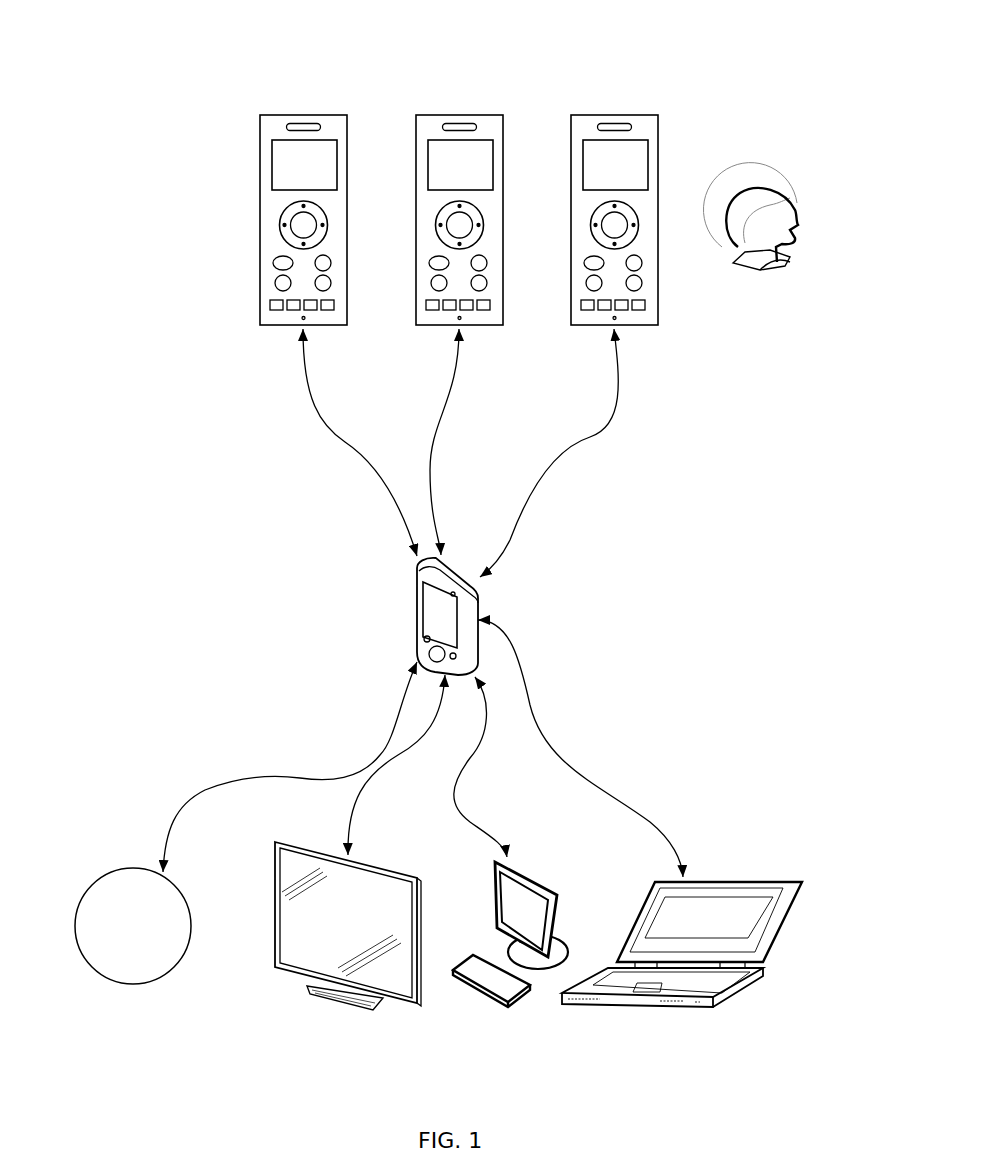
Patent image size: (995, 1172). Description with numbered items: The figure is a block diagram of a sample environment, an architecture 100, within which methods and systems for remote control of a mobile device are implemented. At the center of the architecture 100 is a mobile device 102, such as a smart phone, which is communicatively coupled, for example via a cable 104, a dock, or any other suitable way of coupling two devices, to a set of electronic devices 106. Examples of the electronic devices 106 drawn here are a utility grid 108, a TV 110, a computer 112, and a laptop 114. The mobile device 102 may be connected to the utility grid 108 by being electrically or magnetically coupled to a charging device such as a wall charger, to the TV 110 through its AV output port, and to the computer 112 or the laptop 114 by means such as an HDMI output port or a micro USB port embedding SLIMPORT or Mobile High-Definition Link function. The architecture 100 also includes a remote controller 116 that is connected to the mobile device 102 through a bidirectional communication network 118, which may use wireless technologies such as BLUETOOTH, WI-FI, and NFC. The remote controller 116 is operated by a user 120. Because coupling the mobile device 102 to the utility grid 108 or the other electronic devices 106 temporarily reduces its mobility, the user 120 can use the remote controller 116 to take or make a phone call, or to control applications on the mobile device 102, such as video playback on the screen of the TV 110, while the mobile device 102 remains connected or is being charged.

The architecture 100 is at (836, 68).
The mobile device 102 is at (412, 610).
The cable 104 is at (377, 750).
The electronic devices 106 is at (730, 974).
The utility grid 108 is at (103, 978).
The TV 110 is at (283, 973).
The computer 112 is at (488, 1003).
The laptop 114 is at (637, 1007).
The remote controller 116 is at (260, 168).
The bidirectional communication network 118 is at (553, 452).
The user 120 is at (794, 190).